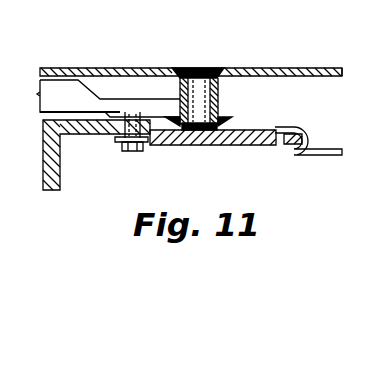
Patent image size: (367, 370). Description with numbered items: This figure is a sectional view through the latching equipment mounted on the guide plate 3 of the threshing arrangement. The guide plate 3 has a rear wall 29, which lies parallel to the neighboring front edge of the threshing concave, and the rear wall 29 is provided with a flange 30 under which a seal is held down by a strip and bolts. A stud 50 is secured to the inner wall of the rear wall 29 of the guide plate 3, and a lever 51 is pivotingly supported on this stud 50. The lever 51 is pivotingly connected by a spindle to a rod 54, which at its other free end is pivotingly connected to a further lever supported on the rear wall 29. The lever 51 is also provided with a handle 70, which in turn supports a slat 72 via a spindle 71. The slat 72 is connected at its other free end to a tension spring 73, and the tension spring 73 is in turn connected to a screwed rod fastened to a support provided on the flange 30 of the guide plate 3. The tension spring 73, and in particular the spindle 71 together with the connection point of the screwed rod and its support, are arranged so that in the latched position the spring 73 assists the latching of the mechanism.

The guide plate 3 is at (288, 66).
The rear wall 29 is at (111, 68).
The flange 30 is at (249, 80).
The stud 50 is at (192, 93).
The lever 51 is at (218, 141).
The rod 54 is at (88, 90).
The handle 70 is at (74, 134).
The spindle 71 is at (133, 152).
The slat 72 is at (188, 141).
The tension spring 73 is at (314, 156).